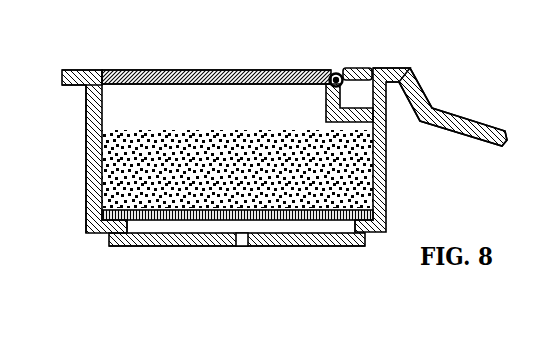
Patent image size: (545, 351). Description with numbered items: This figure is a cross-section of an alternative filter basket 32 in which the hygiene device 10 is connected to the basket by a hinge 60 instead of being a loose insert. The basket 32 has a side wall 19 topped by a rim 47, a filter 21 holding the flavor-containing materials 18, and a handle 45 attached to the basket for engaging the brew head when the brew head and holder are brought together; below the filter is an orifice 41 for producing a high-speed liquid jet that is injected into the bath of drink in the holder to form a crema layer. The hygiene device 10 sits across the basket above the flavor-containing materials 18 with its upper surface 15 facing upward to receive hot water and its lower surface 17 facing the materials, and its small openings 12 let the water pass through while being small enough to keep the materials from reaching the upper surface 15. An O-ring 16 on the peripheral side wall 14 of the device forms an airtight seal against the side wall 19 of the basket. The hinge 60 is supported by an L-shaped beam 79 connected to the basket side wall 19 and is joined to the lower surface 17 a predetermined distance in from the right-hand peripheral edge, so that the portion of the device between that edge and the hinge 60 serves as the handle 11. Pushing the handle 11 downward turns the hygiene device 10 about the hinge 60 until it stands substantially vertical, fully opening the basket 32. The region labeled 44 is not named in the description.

The hygiene device 10 is at (201, 48).
The handle 11 is at (357, 68).
The small openings 12 is at (246, 70).
The peripheral side wall 14 is at (93, 90).
The upper surface 15 is at (158, 76).
The O-ring 16 is at (106, 79).
The lower surface 17 is at (156, 86).
The flavor-containing materials 18 is at (107, 145).
The side wall 19 is at (86, 183).
The filter 21 is at (305, 222).
The brew basket 32 is at (139, 253).
The orifice 41 is at (240, 247).
The screen / space 44 is at (262, 227).
The handle 45 is at (457, 117).
The rim 47 is at (402, 70).
The hinge 60 is at (331, 72).
The L-shaped beam 79 is at (325, 110).